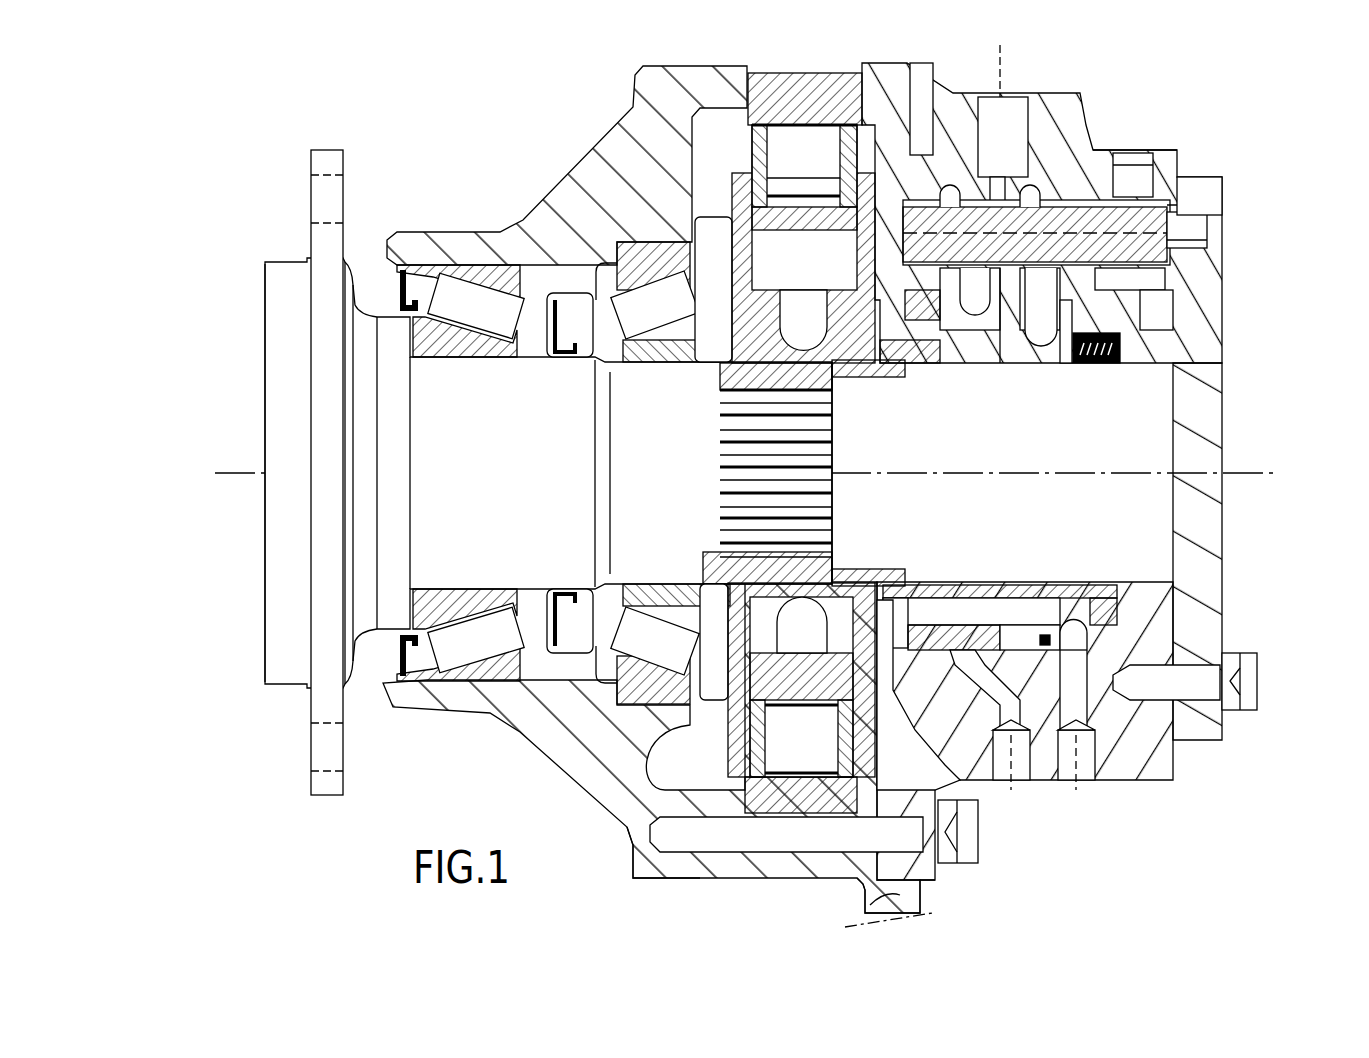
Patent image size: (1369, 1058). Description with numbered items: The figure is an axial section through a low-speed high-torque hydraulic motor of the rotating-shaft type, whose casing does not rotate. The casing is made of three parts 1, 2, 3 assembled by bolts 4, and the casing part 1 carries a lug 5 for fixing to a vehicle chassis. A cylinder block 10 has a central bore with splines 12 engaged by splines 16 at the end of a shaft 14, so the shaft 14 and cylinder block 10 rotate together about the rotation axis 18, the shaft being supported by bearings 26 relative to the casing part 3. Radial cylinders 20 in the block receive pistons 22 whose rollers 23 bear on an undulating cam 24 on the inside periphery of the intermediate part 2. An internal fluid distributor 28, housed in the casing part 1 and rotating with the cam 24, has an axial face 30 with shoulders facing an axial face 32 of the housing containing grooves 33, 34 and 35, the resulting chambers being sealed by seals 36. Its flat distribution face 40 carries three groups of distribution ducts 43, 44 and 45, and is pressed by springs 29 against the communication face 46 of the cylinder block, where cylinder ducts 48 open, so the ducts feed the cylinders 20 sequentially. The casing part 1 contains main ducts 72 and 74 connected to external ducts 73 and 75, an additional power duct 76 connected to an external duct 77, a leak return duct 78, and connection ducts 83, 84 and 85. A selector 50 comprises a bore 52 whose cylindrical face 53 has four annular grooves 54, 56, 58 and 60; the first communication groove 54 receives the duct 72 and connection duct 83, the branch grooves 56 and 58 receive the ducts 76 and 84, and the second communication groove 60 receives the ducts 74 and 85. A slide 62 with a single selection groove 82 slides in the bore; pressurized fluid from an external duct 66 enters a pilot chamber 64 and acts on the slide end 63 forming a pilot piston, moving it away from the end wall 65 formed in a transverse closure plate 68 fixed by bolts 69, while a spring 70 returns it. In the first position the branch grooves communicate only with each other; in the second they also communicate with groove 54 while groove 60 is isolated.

The casing part 1 is at (1172, 781).
The intermediate casing part 2 is at (835, 860).
The casing part 3 is at (672, 870).
The bolts 4 is at (712, 828).
The lug 5 is at (880, 910).
The cylinder block 10 is at (706, 592).
The splines 12 is at (843, 580).
The shaft 14 is at (430, 432).
The splines 16 is at (750, 562).
The rotation axis 18 is at (258, 468).
The cylinders 20 is at (760, 720).
The pistons 22 is at (795, 680).
The rollers 23 is at (823, 720).
The undulating cam 24 is at (775, 790).
The bearings 26 is at (458, 630).
The internal fluid distributor 28 is at (985, 593).
The springs 29 is at (1090, 367).
The axial face 30 is at (1003, 347).
The axial face 32 is at (1037, 630).
The groove 33 is at (948, 643).
The groove 34 is at (1013, 643).
The groove 35 is at (1093, 597).
The seals 36 is at (1078, 630).
The distribution face 40 is at (862, 582).
The distribution ducts 43 is at (937, 340).
The distribution duct 44 is at (1000, 403).
The distribution ducts 45 is at (903, 613).
The communication face 46 is at (885, 635).
The cylinder ducts 48 is at (845, 322).
The selector 50 is at (1083, 153).
The bore 52 is at (912, 222).
The cylindrical face 53 is at (826, 232).
The first communication groove 54 is at (960, 200).
The first branch groove 56 is at (997, 373).
The second branch groove 58 is at (1028, 193).
The second communication groove 60 is at (1087, 197).
The slide 62 is at (1213, 228).
The end of slide 63 is at (1213, 240).
The pilot chamber 64 is at (1203, 192).
The end wall 65 is at (1213, 215).
The external duct 66 is at (1147, 180).
The transverse closure plate 68 is at (1213, 395).
The bolts 69 is at (1237, 653).
The spring 70 is at (1180, 305).
The first main duct 72 is at (1017, 773).
The external duct 73 is at (1010, 793).
The second main duct 74 is at (1087, 770).
The external duct 75 is at (1077, 790).
The additional power duct 76 is at (996, 100).
The external duct 77 is at (1000, 72).
The leak return duct 78 is at (920, 92).
The selection groove 82 is at (1040, 208).
The first connection duct 83 is at (937, 343).
The third connection duct 84 is at (1055, 340).
The second connection duct 85 is at (1113, 293).